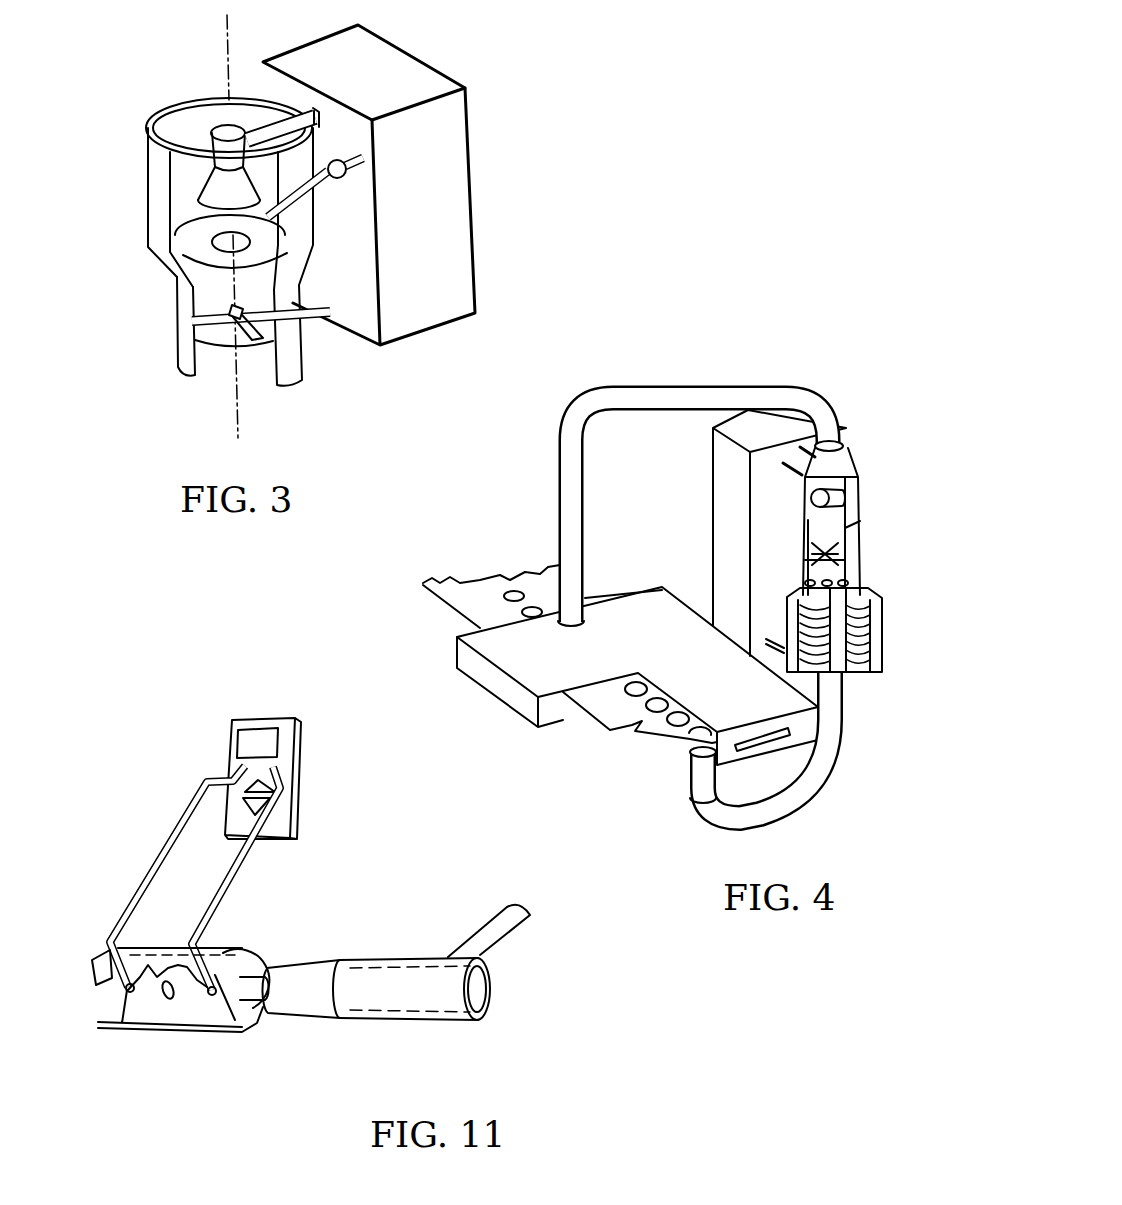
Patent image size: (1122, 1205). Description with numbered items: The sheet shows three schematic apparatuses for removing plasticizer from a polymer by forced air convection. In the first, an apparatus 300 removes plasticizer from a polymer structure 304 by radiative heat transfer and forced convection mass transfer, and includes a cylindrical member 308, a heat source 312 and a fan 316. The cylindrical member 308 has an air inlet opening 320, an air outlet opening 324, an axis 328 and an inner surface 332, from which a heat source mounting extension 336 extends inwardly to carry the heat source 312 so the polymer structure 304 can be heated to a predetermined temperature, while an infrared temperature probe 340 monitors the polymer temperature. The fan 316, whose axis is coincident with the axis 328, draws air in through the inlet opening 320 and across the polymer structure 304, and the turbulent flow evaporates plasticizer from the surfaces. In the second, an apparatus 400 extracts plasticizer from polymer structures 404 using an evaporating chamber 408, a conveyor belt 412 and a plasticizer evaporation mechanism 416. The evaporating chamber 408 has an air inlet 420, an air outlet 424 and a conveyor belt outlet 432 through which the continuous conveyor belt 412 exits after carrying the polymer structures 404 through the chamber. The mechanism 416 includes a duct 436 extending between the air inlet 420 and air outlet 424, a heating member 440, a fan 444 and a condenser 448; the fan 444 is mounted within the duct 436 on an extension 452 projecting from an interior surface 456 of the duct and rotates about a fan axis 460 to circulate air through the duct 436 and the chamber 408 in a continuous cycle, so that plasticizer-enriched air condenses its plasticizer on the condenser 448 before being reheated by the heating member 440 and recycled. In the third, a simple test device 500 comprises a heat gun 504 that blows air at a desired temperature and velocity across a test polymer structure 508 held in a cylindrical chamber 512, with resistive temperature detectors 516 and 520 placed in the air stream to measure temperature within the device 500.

In FIG. 3, the apparatus 300 is at (514, 69).
In FIG. 3, the polymer structure 304 is at (195, 277).
In FIG. 3, the cylindrical member 308 is at (160, 176).
In FIG. 3, the heat source 312 is at (190, 210).
In FIG. 3, the fan 316 is at (252, 347).
In FIG. 3, the air inlet opening 320 is at (207, 364).
In FIG. 3, the air outlet opening 324 is at (221, 119).
In FIG. 3, the axis 328 is at (238, 430).
In FIG. 3, the inner surface 332 is at (167, 125).
In FIG. 3, the heat source mounting extension 336 is at (260, 128).
In FIG. 3, the infrared temperature probe 340 is at (293, 222).
In FIG. 4, the apparatus 400 is at (771, 360).
In FIG. 4, the polymer structures 404 is at (658, 708).
In FIG. 4, the evaporating chamber 408 is at (655, 650).
In FIG. 4, the conveyor belt 412 is at (470, 596).
In FIG. 4, the plasticizer evaporation mechanism 416 is at (790, 551).
In FIG. 4, the air inlet 420 is at (567, 622).
In FIG. 4, the air outlet 424 is at (700, 755).
In FIG. 4, the conveyor belt outlet 432 is at (785, 734).
In FIG. 4, the duct 436 is at (598, 398).
In FIG. 4, the heating member 440 is at (818, 499).
In FIG. 4, the fan 444 is at (818, 552).
In FIG. 4, the condenser 448 is at (855, 641).
In FIG. 4, the extension 452 is at (843, 527).
In FIG. 4, the interior surface 456 is at (815, 542).
In FIG. 4, the fan axis 460 is at (768, 642).
In FIG. 11, the device 500 is at (128, 804).
In FIG. 11, the heat gun 504 is at (318, 1026).
In FIG. 11, the test polymer structure 508 is at (157, 1000).
In FIG. 11, the cylindrical chamber 512 is at (254, 953).
In FIG. 11, the resistive temperature detector 516 is at (100, 957).
In FIG. 11, the resistive temperature detector 520 is at (212, 995).